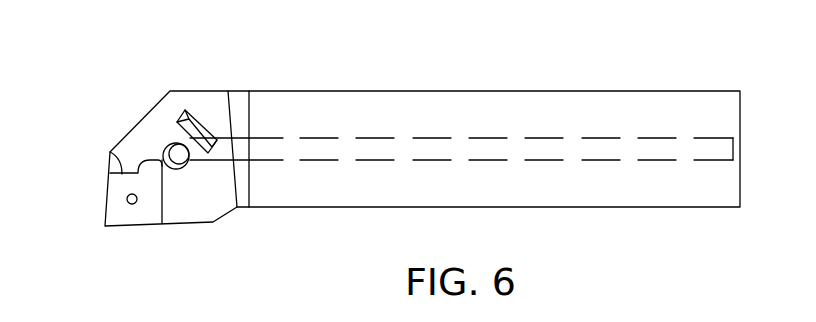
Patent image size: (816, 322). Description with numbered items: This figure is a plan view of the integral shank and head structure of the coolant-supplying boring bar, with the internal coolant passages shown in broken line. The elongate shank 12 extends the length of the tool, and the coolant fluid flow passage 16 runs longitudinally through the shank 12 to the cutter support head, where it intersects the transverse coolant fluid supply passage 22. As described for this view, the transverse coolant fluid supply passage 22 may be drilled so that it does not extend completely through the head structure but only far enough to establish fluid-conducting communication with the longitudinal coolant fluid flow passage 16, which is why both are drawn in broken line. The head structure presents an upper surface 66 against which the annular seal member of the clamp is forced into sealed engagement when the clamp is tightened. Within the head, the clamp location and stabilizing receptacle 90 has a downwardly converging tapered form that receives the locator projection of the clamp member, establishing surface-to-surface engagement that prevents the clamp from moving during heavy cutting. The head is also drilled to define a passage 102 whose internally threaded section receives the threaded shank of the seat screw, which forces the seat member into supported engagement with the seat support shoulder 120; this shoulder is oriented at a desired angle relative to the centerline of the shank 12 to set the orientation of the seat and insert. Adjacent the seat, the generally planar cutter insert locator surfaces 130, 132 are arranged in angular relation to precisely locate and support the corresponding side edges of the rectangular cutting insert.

The elongate shank 12 is at (558, 100).
The coolant fluid flow passage 16 is at (363, 137).
The transverse coolant fluid supply passage 22 is at (163, 157).
The upper surface 66 is at (172, 97).
The clamp location and stabilizing receptacle 90 is at (203, 108).
The passage 102 is at (127, 196).
The seat support shoulder 120 is at (114, 224).
The cutter insert locator surface 130 is at (108, 155).
The cutter insert locator surface 132 is at (163, 197).